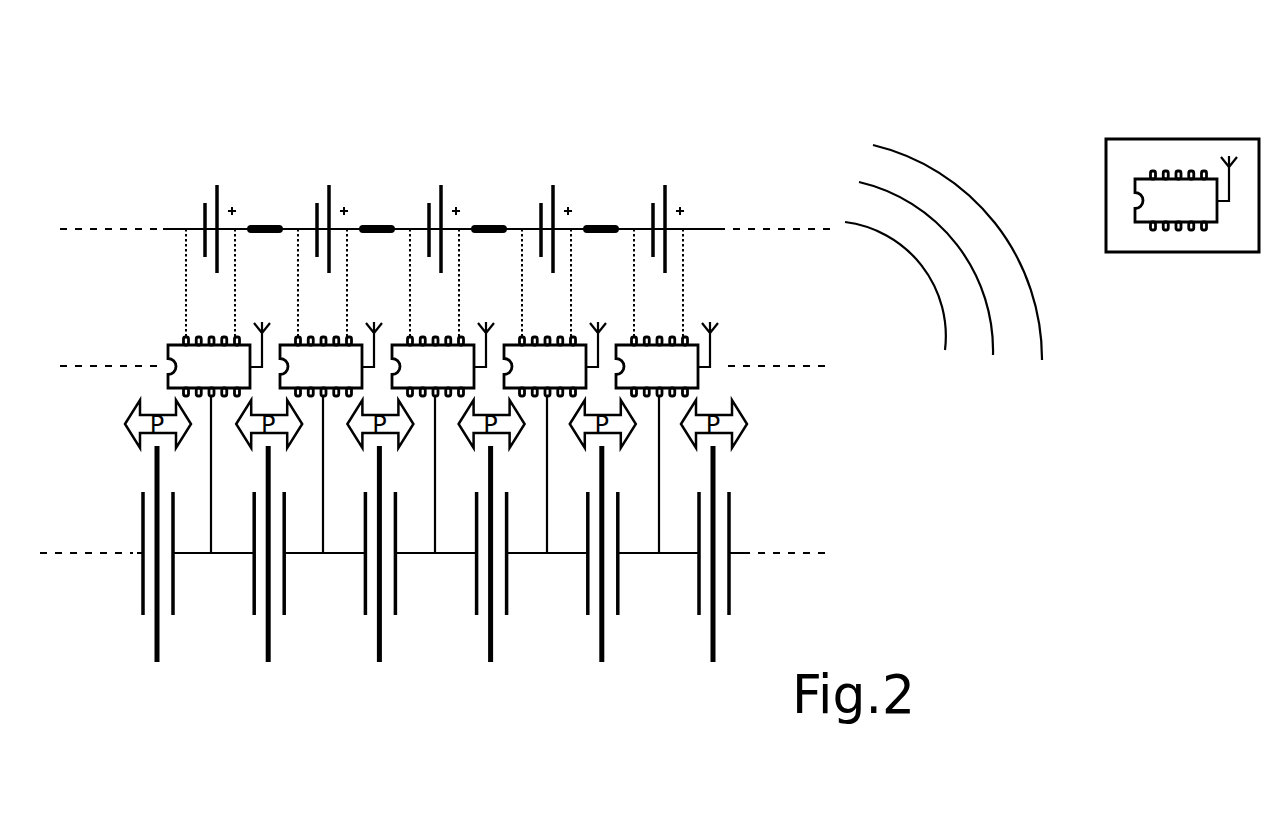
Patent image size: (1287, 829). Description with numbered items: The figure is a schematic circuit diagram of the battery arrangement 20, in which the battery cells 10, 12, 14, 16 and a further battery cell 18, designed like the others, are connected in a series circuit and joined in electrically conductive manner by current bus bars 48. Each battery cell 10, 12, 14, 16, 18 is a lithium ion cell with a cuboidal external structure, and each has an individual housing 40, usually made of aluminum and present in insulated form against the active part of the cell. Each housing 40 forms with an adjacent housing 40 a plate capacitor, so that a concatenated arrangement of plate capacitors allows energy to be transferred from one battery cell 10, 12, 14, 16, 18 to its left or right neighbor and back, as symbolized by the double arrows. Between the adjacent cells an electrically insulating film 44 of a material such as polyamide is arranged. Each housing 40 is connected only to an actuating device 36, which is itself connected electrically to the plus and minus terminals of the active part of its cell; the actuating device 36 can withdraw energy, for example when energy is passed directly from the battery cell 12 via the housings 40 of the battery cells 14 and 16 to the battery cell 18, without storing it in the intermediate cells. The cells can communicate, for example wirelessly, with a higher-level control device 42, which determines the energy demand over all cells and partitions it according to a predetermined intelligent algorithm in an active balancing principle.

The battery cell 10 is at (216, 192).
The battery cell 12 is at (328, 192).
The battery cell 14 is at (440, 192).
The battery cell 16 is at (552, 192).
The battery cell 18 is at (664, 192).
The battery system 20 is at (726, 130).
The actuating device 36 is at (172, 345).
The housing 40 is at (230, 553).
The control device 42 is at (1106, 186).
The electrically insulating film 44 is at (156, 647).
The current bus bar 48 is at (264, 226).